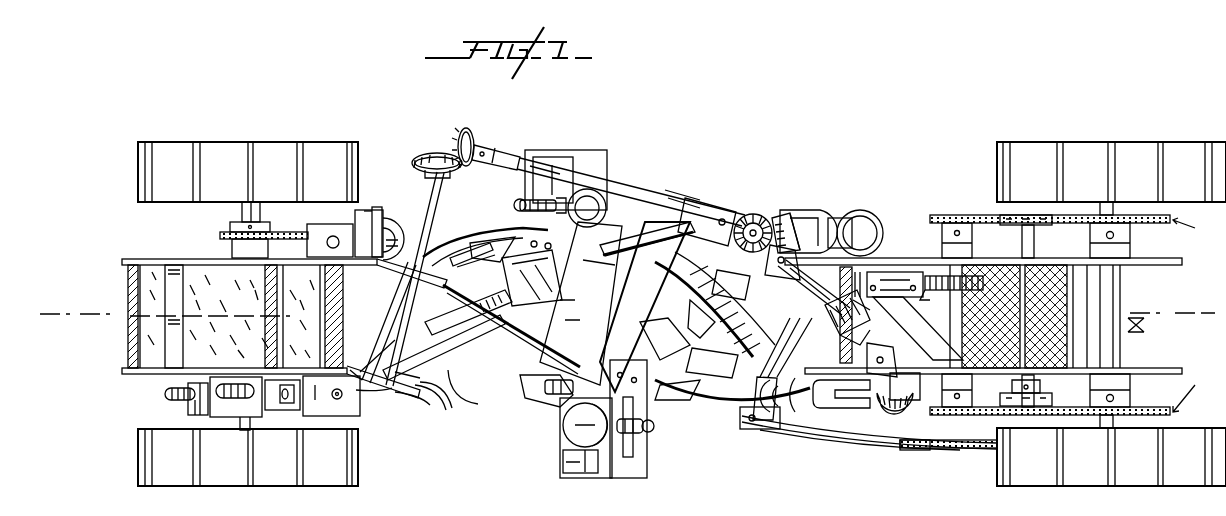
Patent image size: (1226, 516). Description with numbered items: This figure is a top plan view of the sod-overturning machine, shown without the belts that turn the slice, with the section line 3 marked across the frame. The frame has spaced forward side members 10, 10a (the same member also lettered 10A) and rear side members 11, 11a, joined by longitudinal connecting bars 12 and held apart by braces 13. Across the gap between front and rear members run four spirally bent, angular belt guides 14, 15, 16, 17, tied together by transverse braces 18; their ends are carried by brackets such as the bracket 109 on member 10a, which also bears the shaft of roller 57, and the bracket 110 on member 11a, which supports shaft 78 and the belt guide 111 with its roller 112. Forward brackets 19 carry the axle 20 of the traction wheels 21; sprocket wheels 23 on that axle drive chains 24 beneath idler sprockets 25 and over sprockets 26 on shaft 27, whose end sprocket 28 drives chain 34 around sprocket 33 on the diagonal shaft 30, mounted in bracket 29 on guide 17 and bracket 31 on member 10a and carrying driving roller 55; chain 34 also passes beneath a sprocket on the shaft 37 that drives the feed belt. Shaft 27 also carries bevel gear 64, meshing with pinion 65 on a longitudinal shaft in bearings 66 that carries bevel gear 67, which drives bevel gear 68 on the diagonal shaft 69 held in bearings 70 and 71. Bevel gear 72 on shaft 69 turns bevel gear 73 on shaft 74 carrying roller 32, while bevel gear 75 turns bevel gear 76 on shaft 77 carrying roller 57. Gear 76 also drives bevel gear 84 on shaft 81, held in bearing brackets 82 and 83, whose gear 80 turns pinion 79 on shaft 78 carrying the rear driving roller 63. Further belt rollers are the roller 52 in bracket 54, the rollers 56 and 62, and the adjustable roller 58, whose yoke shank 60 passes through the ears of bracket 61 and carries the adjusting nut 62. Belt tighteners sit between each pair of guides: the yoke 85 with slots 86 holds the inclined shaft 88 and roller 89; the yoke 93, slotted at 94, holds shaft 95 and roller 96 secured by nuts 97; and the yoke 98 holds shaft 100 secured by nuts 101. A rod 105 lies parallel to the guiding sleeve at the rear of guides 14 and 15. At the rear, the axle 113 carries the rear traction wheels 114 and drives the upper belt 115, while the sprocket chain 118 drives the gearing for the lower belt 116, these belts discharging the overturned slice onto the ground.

The section line 3 is at (616, 319).
The forward side member 10 is at (1005, 374).
The forward side member 10a is at (998, 258).
The forward side member 10A is at (472, 408).
The rear side member 11 is at (122, 370).
The rear side member 11a is at (128, 260).
The connecting bars 12 is at (410, 395).
The braces 13 is at (170, 335).
The belt guide 14 is at (445, 325).
The belt guide 15 is at (440, 405).
The belt guide 16 is at (603, 332).
The belt guide 17 is at (458, 240).
The transverse braces 18 is at (496, 282).
The brackets 19 is at (438, 322).
The axle 20 is at (1116, 208).
The traction wheels 21 is at (1183, 150).
The sprocket wheels 23 is at (1191, 315).
The chain 24 is at (1075, 216).
The idler sprocket wheels 25 is at (1048, 225).
The sprocket wheels 26 is at (947, 215).
The shaft 27 is at (1011, 316).
The sprocket wheel 28 is at (970, 450).
The bracket 29 is at (740, 415).
The shaft 30 is at (765, 400).
The bracket 31 is at (848, 242).
The roller 32 is at (795, 405).
The sprocket wheel 33 is at (745, 428).
The sprocket chain 34 is at (860, 445).
The shaft 37 is at (910, 448).
The roller 52 is at (398, 232).
The bracket 54 is at (287, 412).
The roller 55 is at (770, 338).
The roller 56 is at (378, 285).
The roller 57 is at (884, 229).
The roller 58 is at (362, 420).
The screw-threaded shank 60 is at (165, 394).
The bracket 61 is at (213, 417).
The adjusting nut 62 is at (190, 410).
The roller 63 is at (375, 330).
The beveled gear wheel 64 is at (983, 283).
The beveled pinion 65 is at (925, 275).
The bearings 66 is at (918, 300).
The beveled gear wheel 67 is at (900, 272).
The beveled gear wheel 68 is at (830, 340).
The shaft 69 is at (800, 308).
The bearing 70 is at (796, 270).
The bearing 71 is at (918, 380).
The beveled gear wheel 72 is at (898, 358).
The beveled gear wheel 73 is at (905, 410).
The shaft 74 is at (868, 408).
The beveled gear wheel 75 is at (793, 212).
The beveled gear wheel 76 is at (777, 212).
The shaft 77 is at (750, 212).
The shaft 78 is at (435, 185).
The beveled pinion 79 is at (432, 155).
The beveled gear wheel 80 is at (466, 134).
The shaft 81 is at (640, 200).
The bearing bracket 82 is at (500, 150).
The bearing bracket 83 is at (672, 210).
The beveled gear wheel 84 is at (706, 210).
The supporting yoke 85 is at (584, 478).
The slots 86 is at (566, 466).
The shaft 88 is at (655, 426).
The belt tightening roller 89 is at (565, 430).
The yoke 93 is at (592, 150).
The slots 94 is at (552, 165).
The shaft 95 is at (515, 202).
The roller 96 is at (600, 200).
The nuts 97 is at (612, 262).
The yoke 98 is at (605, 296).
The shaft 100 is at (610, 405).
The nuts 101 is at (552, 375).
The rod 105 is at (500, 320).
The bracket 109 is at (802, 212).
The bracket 110 is at (450, 268).
The belt guide 111 is at (358, 222).
The roller 112 is at (377, 208).
The rear axle 113 is at (242, 212).
The rear traction wheels 114 is at (220, 152).
The upper belt 115 is at (128, 297).
The lower belt 116 is at (290, 342).
The sprocket chain 118 is at (290, 233).